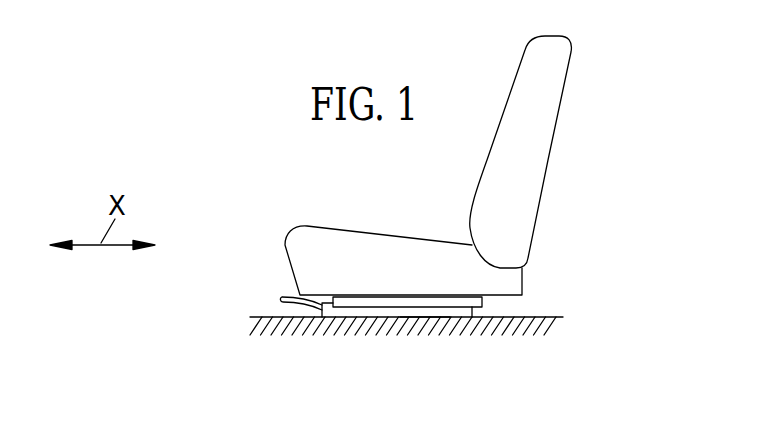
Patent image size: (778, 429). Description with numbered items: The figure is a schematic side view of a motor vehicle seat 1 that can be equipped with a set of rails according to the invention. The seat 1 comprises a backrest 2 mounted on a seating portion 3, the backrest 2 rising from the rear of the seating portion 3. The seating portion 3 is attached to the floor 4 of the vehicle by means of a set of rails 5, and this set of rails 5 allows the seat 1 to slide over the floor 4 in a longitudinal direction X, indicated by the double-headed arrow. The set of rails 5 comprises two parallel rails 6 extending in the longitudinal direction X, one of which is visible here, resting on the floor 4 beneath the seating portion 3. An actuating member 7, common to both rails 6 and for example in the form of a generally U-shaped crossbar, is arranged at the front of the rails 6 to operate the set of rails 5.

The motor vehicle seat 1 is at (600, 78).
The backrest 2 is at (524, 125).
The seating portion 3 is at (333, 245).
The floor 4 is at (264, 316).
The set of rails 5 is at (510, 305).
The rails 6 is at (429, 331).
The actuating member 7 is at (282, 299).